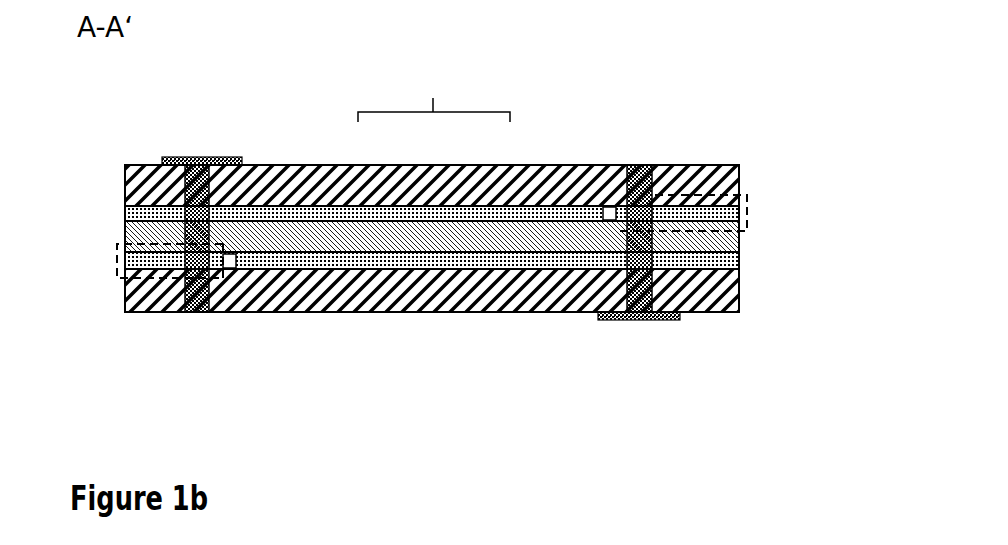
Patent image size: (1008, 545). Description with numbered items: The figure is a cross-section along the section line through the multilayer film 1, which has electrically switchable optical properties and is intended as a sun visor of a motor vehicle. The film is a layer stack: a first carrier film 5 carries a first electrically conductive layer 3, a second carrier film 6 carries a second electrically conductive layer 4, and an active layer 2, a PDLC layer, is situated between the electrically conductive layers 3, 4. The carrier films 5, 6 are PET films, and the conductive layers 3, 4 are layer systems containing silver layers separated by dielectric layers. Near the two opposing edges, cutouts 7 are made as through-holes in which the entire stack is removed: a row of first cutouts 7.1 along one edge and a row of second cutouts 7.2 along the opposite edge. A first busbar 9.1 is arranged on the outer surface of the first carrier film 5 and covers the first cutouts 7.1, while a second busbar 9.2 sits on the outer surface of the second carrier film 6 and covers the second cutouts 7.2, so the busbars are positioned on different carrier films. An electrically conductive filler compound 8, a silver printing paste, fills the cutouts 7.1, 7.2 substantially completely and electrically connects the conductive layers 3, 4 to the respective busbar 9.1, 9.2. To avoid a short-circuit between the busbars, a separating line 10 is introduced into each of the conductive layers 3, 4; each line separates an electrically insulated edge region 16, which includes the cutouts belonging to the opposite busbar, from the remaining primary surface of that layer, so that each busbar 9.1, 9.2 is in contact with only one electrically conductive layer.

The multilayer film 1 is at (822, 147).
The active layer 2 is at (735, 237).
The first electrically conductive layer 3 is at (720, 260).
The second electrically conductive layer 4 is at (717, 212).
The first carrier film 5 is at (720, 306).
The second carrier film 6 is at (707, 172).
The cutouts 7 is at (434, 92).
The first cutouts 7.1 is at (623, 191).
The second cutouts 7.2 is at (222, 176).
The electrically conductive filler compound 8 is at (195, 290).
The first busbar 9.1 is at (660, 318).
The second busbar 9.2 is at (208, 157).
The separating line 10 is at (603, 219).
The electrically insulated edge region 16 is at (672, 198).